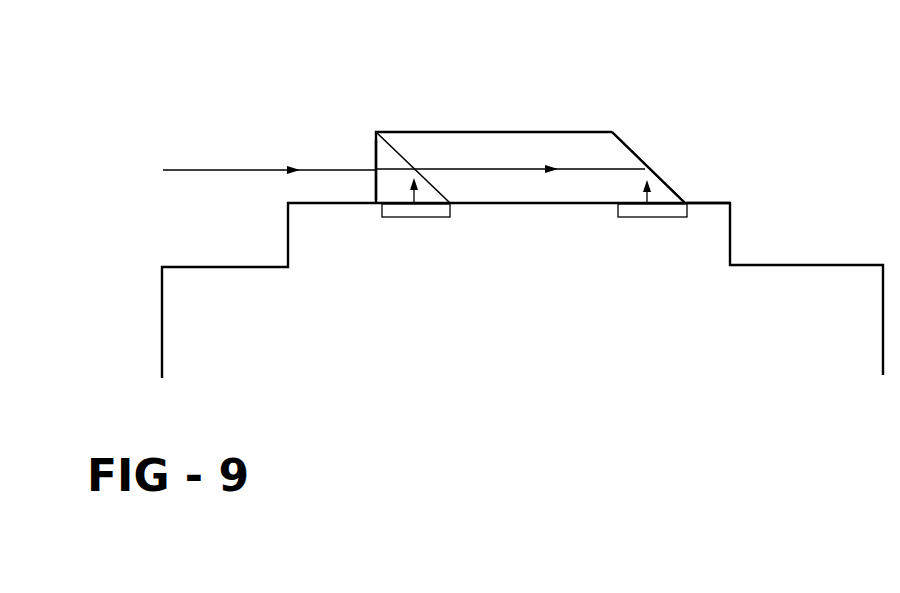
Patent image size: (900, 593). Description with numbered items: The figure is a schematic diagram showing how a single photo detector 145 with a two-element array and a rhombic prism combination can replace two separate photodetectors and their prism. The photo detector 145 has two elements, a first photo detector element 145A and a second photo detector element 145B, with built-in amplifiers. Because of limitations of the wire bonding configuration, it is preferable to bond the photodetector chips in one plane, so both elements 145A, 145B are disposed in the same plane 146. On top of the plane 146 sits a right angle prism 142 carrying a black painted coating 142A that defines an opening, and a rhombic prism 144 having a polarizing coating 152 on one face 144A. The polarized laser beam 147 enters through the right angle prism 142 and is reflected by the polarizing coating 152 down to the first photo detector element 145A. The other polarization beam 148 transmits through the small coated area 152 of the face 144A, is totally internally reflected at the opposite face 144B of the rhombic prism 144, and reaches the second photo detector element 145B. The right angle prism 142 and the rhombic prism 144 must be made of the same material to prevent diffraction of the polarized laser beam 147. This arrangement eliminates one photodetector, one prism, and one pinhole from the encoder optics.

The right angle prism 142 is at (375, 132).
The black painted coating 142A is at (374, 158).
The rhombic prism 144 is at (577, 133).
The face of rhombic prism 144A is at (383, 143).
The face of rhombic prism 144B is at (631, 150).
The photo detector 145 is at (827, 240).
The photo detector element 145A is at (425, 213).
The photo detector element 145B is at (648, 213).
The plane 146 is at (705, 203).
The polarized laser beam 147 is at (242, 168).
The other polarization beam 148 is at (600, 169).
The polarizing coating 152 is at (433, 170).